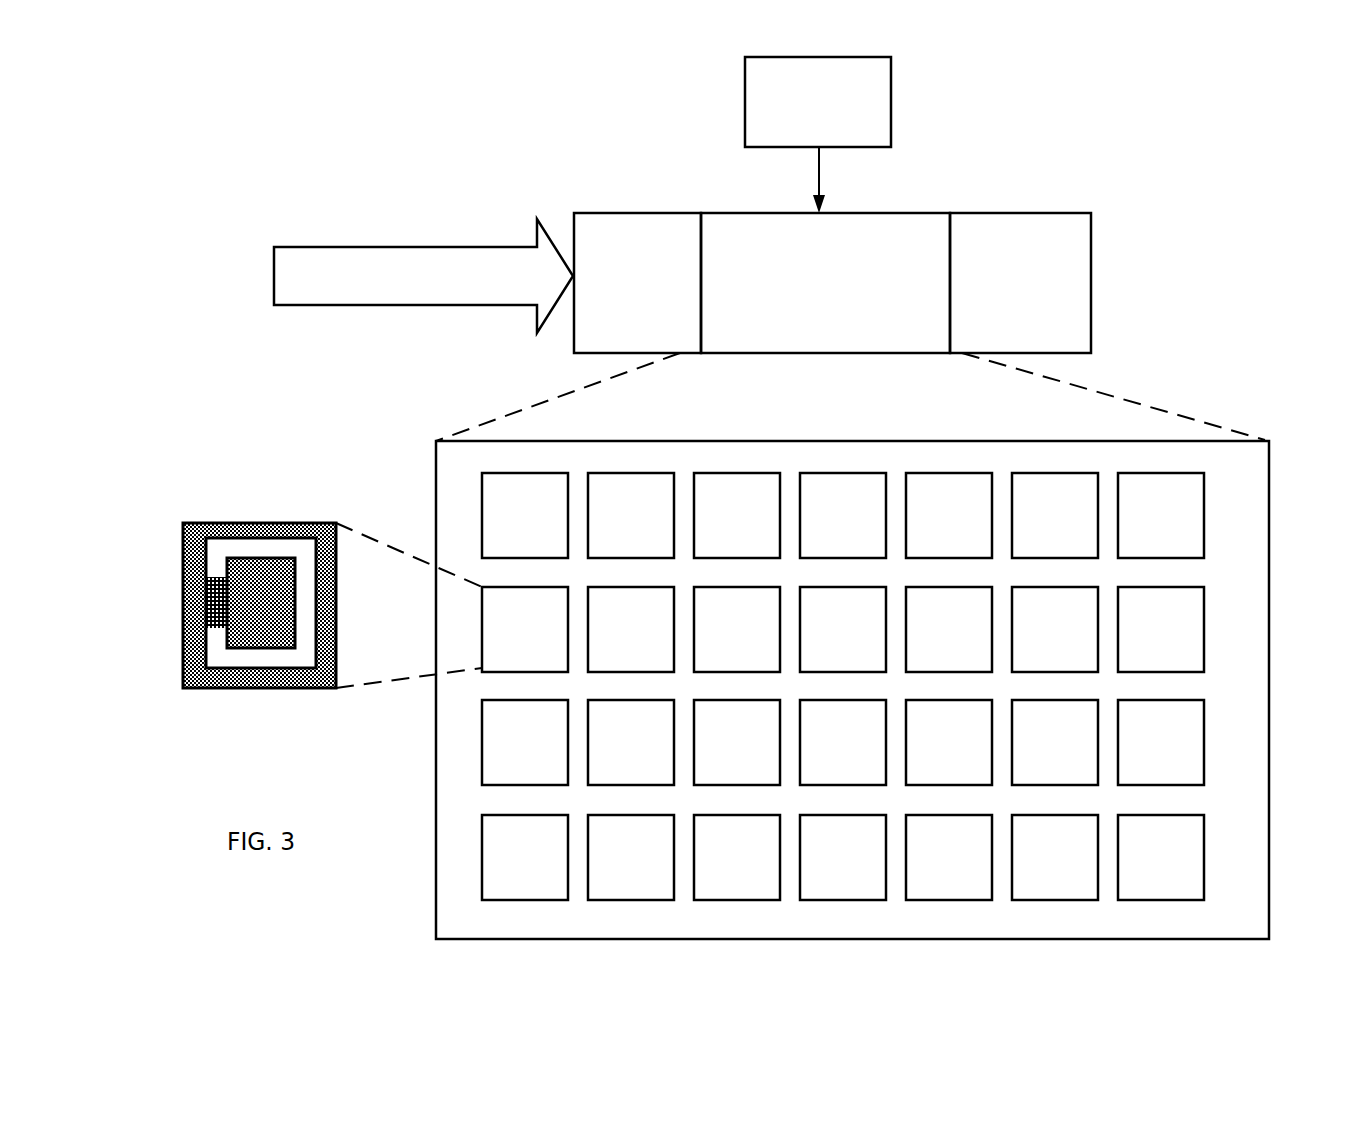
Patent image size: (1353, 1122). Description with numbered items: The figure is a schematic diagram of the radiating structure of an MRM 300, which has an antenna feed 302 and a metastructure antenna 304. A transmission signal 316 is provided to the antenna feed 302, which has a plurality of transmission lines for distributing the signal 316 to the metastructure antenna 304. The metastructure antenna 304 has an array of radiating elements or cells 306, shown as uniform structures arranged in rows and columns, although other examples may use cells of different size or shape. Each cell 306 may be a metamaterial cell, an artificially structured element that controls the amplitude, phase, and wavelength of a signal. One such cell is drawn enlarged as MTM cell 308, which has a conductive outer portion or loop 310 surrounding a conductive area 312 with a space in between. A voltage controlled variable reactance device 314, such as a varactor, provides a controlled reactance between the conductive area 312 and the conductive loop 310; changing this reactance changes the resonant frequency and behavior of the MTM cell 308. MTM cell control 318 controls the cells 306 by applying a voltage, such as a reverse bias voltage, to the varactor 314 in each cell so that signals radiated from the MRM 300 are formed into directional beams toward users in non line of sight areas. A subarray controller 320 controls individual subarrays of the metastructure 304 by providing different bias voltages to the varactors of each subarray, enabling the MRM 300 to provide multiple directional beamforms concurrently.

The MRM 300 is at (371, 133).
The antenna feed 302 is at (602, 213).
The metastructure antenna 304 is at (887, 212).
The array of radiating elements or cells 306 is at (852, 441).
The MTM cell 308 is at (482, 640).
The conductive outer portion or loop 310 is at (262, 533).
The conductive area 312 is at (255, 618).
The voltage controlled variable reactance device 314 is at (213, 603).
The transmission signal 316 is at (437, 247).
The MTM cell control 318 is at (892, 105).
The subarray controller 320 is at (1022, 212).